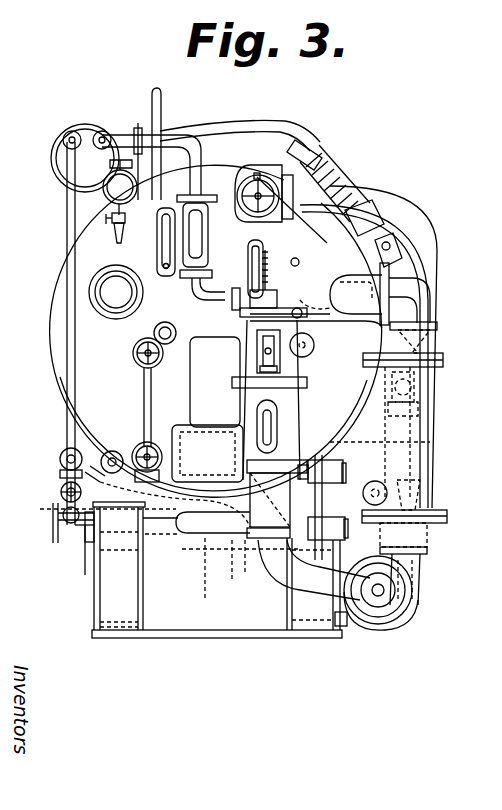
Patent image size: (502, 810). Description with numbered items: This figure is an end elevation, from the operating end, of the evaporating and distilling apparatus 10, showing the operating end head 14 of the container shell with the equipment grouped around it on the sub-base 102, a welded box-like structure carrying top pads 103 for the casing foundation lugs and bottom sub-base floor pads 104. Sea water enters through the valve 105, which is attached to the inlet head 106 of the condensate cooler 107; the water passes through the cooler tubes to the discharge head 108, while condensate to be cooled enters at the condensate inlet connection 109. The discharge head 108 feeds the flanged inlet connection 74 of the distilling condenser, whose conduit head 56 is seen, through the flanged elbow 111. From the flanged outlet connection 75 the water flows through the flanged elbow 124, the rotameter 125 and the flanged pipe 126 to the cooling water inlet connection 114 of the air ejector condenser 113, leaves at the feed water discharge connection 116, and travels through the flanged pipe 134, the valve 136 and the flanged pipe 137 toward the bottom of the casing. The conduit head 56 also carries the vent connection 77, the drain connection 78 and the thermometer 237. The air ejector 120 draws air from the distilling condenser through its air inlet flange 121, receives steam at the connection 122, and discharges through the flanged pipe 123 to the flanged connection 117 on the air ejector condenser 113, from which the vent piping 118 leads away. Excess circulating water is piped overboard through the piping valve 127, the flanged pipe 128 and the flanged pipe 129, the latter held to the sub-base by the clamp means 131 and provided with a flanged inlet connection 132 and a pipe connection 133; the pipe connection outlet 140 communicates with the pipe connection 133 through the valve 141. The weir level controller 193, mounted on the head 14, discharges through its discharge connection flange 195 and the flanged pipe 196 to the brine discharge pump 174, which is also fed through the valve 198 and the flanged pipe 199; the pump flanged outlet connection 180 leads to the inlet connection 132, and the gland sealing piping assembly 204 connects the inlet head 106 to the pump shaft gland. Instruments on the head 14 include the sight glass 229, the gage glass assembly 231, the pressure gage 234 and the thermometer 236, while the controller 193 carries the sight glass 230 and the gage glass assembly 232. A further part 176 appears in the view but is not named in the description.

The evaporating and distilling apparatus 10 is at (240, 675).
The operating end head 14 is at (60, 326).
The conduit head 56 is at (238, 194).
The flanged inlet connection 74 is at (344, 275).
The flanged outlet connection 75 is at (233, 313).
The vent connection 77 is at (265, 176).
The drain connection 78 is at (320, 331).
The sub-base 102 is at (188, 638).
The top pads 103 is at (334, 497).
The bottom sub-base floor pads 104 is at (268, 636).
The valve 105 is at (420, 566).
The inlet head 106 is at (428, 532).
The condensate cooler 107 is at (480, 444).
The discharge head 108 is at (420, 352).
The condensate inlet connection 109 is at (385, 484).
The flanged elbow 111 is at (413, 293).
The air ejector condenser 113 is at (51, 157).
The cooling water inlet connection 114 is at (104, 132).
The feed water discharge connection 116 is at (70, 134).
The flanged connection 117 is at (138, 124).
The vent piping 118 is at (162, 107).
The air ejector 120 is at (390, 222).
The air inlet flange 121 is at (315, 249).
The steam connection 122 is at (400, 248).
The flanged pipe 123 is at (291, 128).
The flanged elbow 124 is at (198, 293).
The rotameter 125 is at (183, 217).
The flanged pipe 126 is at (188, 150).
The piping valve 127 is at (270, 243).
The flanged pipe 128 is at (387, 194).
The flanged pipe 129 is at (217, 535).
The clamp means 131 is at (97, 569).
The flanged inlet connection 132 is at (246, 570).
The pipe connection 133 is at (66, 533).
The flanged pipe 134 is at (67, 213).
The valve 136 is at (142, 434).
The flanged pipe 137 is at (163, 512).
The pipe connection outlet 140 is at (60, 475).
The valve 141 is at (62, 495).
The brine discharge pump 174 is at (465, 643).
The blower support 176 is at (346, 627).
The flanged outlet connection 180 is at (425, 553).
The weir level controller 193 is at (342, 414).
The discharge connection flange 195 is at (305, 560).
The flanged pipe 196 is at (328, 585).
The valve 198 is at (181, 503).
The flanged pipe 199 is at (232, 592).
The gland sealing piping assembly 204 is at (330, 541).
The sight glass 229 is at (117, 302).
The sight glass 230 is at (262, 419).
The gage glass assembly 231 is at (146, 385).
The gage glass assembly 232 is at (290, 505).
The pressure gage 234 is at (107, 179).
The thermometer 236 is at (158, 232).
The thermometer 237 is at (333, 285).